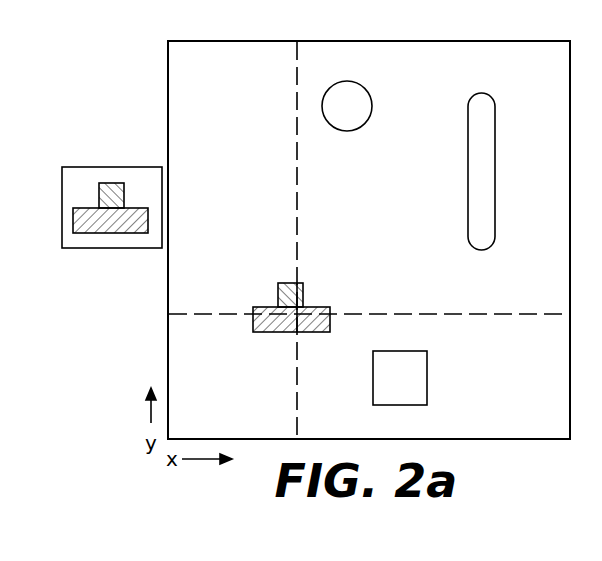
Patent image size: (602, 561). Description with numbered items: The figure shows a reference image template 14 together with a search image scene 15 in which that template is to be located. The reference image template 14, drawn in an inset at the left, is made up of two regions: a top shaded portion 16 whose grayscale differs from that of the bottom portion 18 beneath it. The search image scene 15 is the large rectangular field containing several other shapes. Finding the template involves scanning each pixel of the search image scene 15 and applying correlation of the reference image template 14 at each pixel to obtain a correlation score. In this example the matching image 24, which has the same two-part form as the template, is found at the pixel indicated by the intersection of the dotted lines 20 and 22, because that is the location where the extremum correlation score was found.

The reference image template 14 is at (100, 249).
The search image scene 15 is at (500, 439).
The top shaded portion 16 is at (109, 182).
The bottom portion 18 is at (133, 208).
The dotted line 20 is at (298, 218).
The dotted line 22 is at (215, 315).
The matching image 24 is at (317, 305).